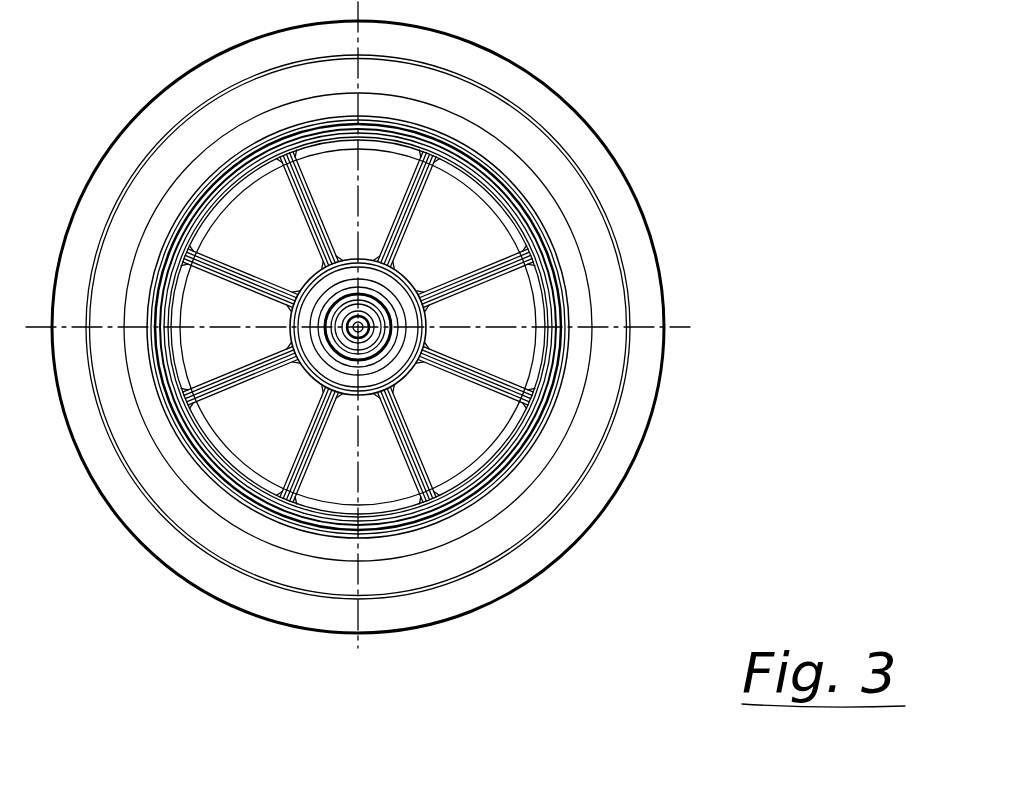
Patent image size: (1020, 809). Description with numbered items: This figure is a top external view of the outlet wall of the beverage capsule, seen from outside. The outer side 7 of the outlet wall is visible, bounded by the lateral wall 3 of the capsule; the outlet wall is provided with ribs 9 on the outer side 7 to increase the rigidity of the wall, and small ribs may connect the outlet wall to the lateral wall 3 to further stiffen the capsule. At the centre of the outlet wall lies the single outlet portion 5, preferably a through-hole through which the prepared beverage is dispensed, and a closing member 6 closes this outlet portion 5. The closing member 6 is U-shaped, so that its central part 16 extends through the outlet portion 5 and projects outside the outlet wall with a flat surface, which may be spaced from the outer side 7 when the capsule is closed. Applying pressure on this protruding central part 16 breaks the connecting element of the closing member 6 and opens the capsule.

The lateral wall 3 is at (240, 550).
The outlet portion 5 is at (388, 356).
The closing member 6 is at (400, 332).
The outer side of the outlet wall 7 is at (333, 487).
The ribs 9 is at (508, 256).
The central part of the closing member 16 is at (358, 344).